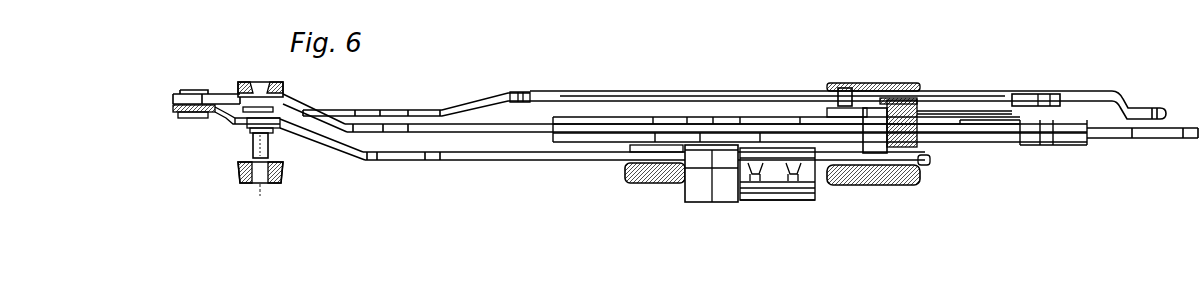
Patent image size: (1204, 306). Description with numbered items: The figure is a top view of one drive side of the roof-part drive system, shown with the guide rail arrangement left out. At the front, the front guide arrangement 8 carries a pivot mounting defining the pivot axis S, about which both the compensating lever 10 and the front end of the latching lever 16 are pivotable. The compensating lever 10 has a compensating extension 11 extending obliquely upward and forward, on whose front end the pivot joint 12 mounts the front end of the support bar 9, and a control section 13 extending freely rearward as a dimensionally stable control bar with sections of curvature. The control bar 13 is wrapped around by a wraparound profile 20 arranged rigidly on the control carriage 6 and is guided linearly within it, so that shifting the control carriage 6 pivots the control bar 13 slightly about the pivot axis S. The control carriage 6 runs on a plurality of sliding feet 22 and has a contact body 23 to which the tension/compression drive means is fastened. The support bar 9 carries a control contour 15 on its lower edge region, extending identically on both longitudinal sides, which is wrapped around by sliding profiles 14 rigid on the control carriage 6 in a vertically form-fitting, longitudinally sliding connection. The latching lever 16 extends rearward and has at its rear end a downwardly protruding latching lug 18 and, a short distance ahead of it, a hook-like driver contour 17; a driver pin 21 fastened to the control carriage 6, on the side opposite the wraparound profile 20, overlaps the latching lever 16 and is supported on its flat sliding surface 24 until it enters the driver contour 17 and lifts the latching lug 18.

The control carriage 6 is at (797, 205).
The front guide arrangement 8 is at (290, 183).
The support bar 9 is at (460, 128).
The compensating lever 10 is at (364, 162).
The compensating extension 11 is at (227, 122).
The pivot joint 12 is at (190, 88).
The control section 13 is at (399, 158).
The sliding profile 14 is at (883, 143).
The control contour 15 is at (623, 138).
The latching lever 16 is at (508, 95).
The driver contour 17 is at (1040, 90).
The latching lug 18 is at (1143, 110).
The wraparound profile 20 is at (703, 190).
The driver pin 21 is at (845, 87).
The sliding feet 22 is at (907, 90).
The contact body 23 is at (765, 200).
The sliding surface 24 is at (710, 95).
The pivot axis S is at (272, 138).